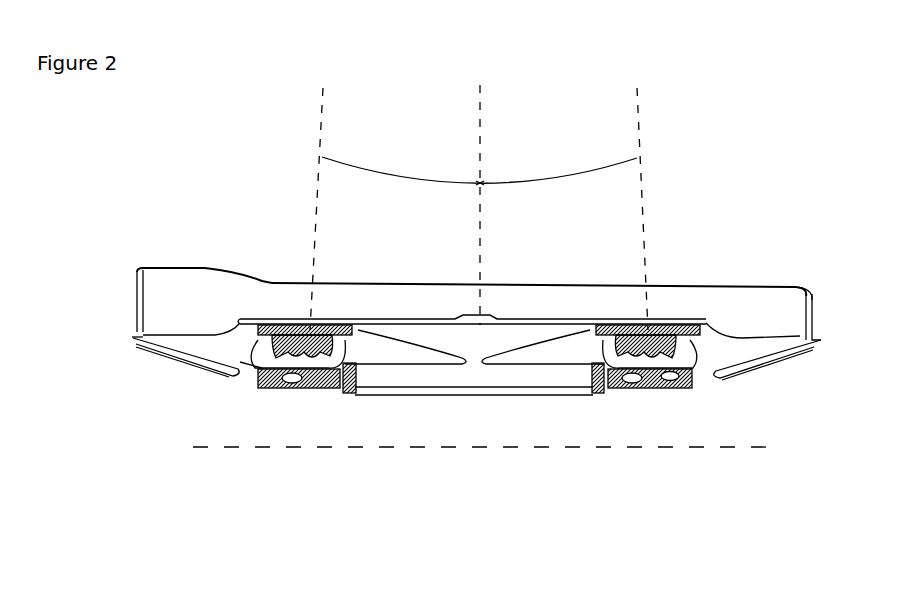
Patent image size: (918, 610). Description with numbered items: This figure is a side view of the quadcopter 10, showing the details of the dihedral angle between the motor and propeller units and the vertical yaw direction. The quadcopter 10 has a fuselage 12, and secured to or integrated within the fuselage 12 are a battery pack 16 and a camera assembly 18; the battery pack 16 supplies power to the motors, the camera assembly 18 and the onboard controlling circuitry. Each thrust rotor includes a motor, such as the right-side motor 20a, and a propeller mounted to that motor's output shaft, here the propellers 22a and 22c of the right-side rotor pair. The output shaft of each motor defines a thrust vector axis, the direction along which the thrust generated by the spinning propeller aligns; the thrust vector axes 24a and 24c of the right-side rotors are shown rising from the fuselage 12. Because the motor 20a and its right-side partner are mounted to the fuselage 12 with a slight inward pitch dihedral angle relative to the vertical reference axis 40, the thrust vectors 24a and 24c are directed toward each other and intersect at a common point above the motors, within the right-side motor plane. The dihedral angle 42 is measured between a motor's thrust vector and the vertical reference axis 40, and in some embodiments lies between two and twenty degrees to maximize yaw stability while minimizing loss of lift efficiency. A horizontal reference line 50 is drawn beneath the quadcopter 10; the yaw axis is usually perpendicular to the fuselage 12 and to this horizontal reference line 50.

The quadcopter 10 is at (757, 160).
The fuselage 12 is at (763, 298).
The battery pack 16 is at (467, 377).
The camera assembly 18 is at (112, 292).
The motor 20a is at (278, 382).
The propeller 22a is at (217, 347).
The propeller 22c is at (738, 352).
The thrust vector axis 24a is at (318, 205).
The thrust vector axis 24c is at (637, 105).
The vertical reference axis 40 is at (480, 93).
The dihedral angle 42 is at (368, 168).
The horizontal reference line 50 is at (673, 448).